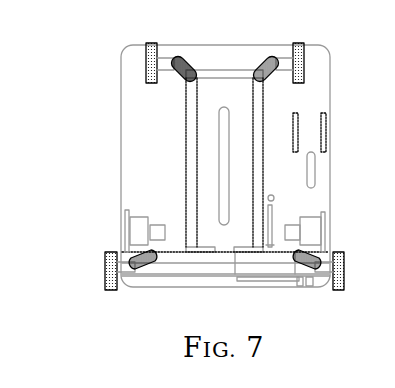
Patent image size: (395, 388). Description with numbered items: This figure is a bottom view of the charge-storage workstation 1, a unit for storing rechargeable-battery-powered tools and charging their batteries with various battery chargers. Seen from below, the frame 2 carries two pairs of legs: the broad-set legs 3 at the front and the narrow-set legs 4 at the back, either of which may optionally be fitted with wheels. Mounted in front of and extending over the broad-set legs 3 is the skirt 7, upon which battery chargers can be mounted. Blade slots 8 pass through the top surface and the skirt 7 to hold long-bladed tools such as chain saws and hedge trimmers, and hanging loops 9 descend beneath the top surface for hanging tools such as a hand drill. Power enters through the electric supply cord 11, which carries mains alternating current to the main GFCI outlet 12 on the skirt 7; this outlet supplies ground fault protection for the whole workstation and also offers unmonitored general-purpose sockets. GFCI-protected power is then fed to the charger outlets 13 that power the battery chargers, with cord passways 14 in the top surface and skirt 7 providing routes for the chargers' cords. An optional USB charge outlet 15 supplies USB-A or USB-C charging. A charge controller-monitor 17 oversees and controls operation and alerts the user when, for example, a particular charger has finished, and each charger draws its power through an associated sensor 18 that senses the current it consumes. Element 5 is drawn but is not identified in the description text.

The charge-storage workstation 1 is at (51, 28).
The frame 2 is at (186, 150).
The broad-set legs 3 is at (137, 262).
The narrow-set legs 4 is at (180, 77).
The mounting stud 5 is at (152, 43).
The skirt 7 is at (178, 277).
The blade slots 8 is at (313, 152).
The hanging loops 9 is at (294, 116).
The electric supply cord 11 is at (273, 204).
The main GFCI outlet 12 is at (247, 279).
The charger outlets 13 is at (142, 217).
The cord passways 14 is at (225, 110).
The USB charge outlet 15 is at (309, 284).
The charge controller-monitor 17 is at (298, 283).
The sensor 18 is at (160, 225).